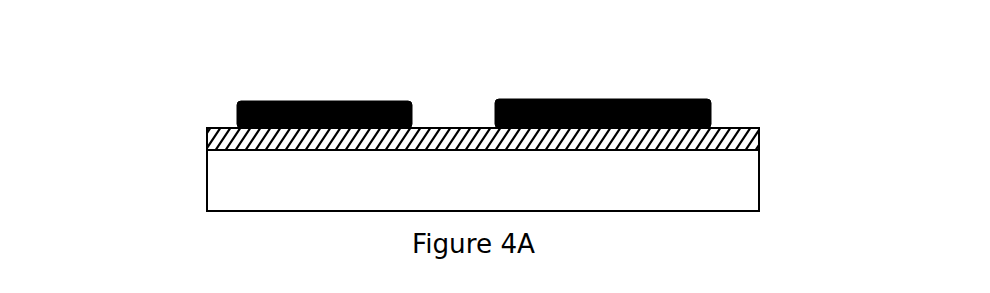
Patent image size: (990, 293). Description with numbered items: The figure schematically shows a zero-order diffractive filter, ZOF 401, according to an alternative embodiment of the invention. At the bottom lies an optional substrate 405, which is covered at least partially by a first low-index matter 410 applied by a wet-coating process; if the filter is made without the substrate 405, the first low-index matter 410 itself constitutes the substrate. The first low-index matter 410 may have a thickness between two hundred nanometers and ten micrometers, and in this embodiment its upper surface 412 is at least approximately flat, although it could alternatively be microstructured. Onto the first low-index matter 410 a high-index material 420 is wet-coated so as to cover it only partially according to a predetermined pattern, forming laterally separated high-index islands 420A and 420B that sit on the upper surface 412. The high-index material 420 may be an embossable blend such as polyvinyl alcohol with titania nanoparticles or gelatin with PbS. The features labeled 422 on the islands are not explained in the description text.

The zero-order diffractive filter 401 is at (799, 179).
The substrate 405 is at (207, 203).
The first low-index matter 410 is at (207, 150).
The upper surface 412 is at (222, 128).
The high-index material 420 is at (237, 104).
The high-index island 420A is at (318, 80).
The high-index island 420B is at (611, 72).
The electrode edge 422 is at (362, 101).